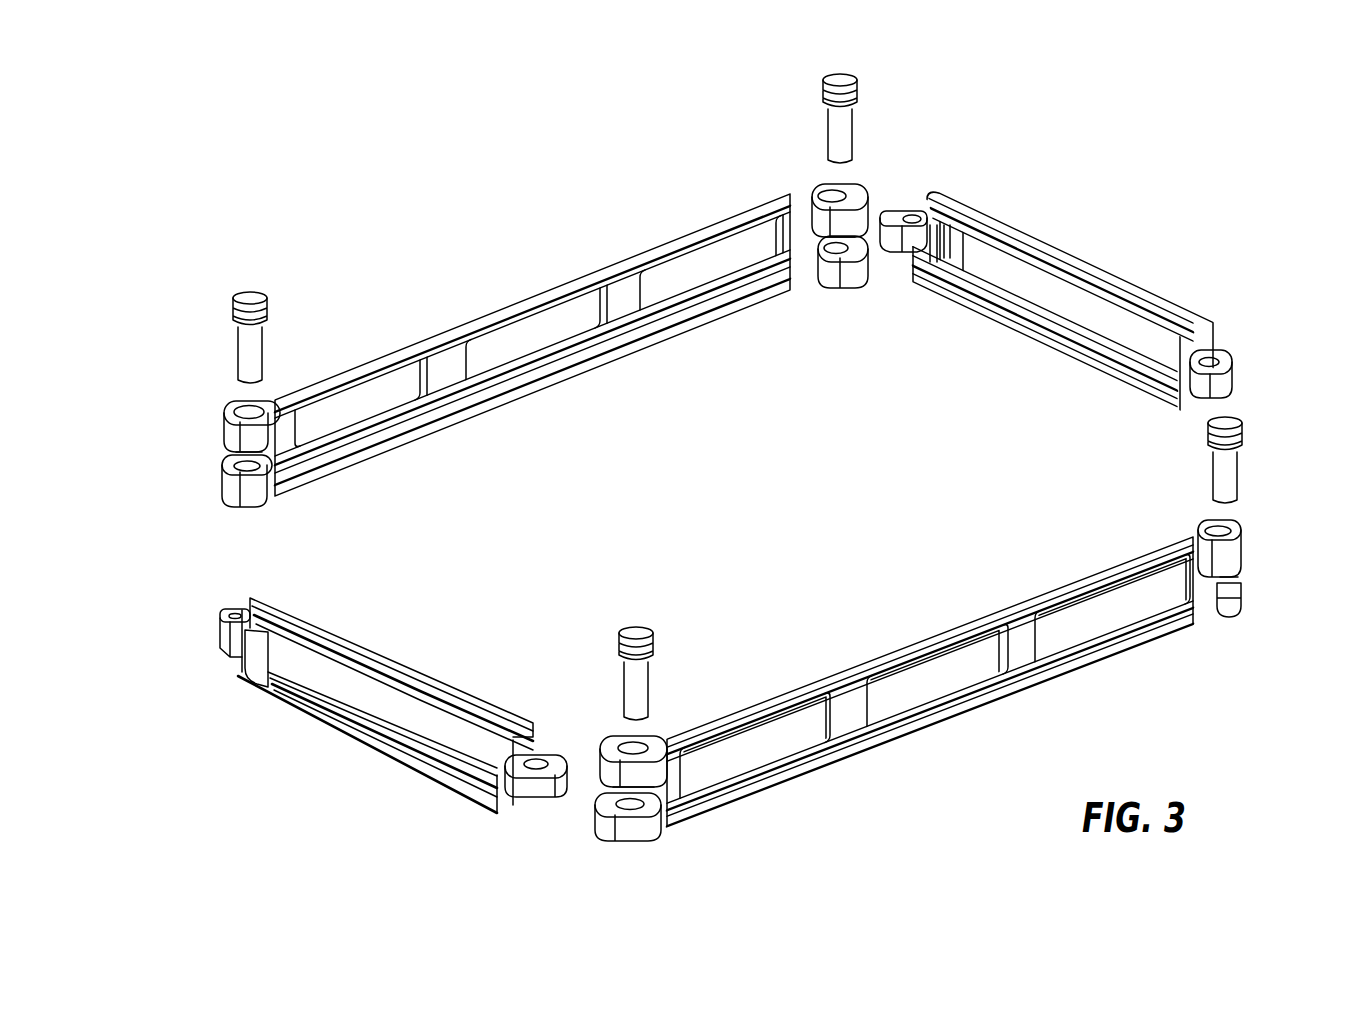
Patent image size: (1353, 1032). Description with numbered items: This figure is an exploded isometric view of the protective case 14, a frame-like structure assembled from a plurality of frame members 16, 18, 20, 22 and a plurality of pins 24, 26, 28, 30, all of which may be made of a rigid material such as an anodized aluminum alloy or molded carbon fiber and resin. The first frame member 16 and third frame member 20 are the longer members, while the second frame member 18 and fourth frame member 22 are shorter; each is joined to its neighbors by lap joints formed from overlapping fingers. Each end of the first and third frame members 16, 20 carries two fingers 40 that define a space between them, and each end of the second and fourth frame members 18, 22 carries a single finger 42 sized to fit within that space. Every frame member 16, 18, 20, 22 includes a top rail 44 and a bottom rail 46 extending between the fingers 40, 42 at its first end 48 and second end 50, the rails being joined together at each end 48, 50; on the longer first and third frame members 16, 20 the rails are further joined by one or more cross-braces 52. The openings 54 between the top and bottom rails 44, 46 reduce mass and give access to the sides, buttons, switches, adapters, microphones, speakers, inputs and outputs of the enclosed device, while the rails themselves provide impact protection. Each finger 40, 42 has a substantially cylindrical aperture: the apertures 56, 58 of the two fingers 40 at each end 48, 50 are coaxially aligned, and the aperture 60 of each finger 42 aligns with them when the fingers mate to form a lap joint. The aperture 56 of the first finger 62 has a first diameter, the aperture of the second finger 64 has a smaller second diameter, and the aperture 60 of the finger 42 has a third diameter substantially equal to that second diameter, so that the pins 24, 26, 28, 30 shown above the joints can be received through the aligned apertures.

The protective case 14 is at (1243, 163).
The first frame member 16 is at (525, 295).
The second frame member 18 is at (352, 745).
The third frame member 20 is at (932, 738).
The fourth frame member 22 is at (1098, 272).
The pin 24 is at (252, 300).
The pin 26 is at (1227, 425).
The pin 28 is at (843, 78).
The pin 30 is at (641, 632).
The fingers 40 is at (720, 505).
The finger 42 is at (228, 635).
The top rail 44 is at (582, 280).
The bottom rail 46 is at (720, 355).
The first end 48 is at (306, 490).
The second end 50 is at (704, 166).
The cross-brace 52 is at (456, 378).
The opening 54 is at (742, 275).
The aperture 56 is at (250, 413).
The aperture 58 is at (237, 466).
The aperture 60 is at (247, 615).
The first finger 62 is at (228, 428).
The second finger 64 is at (226, 487).